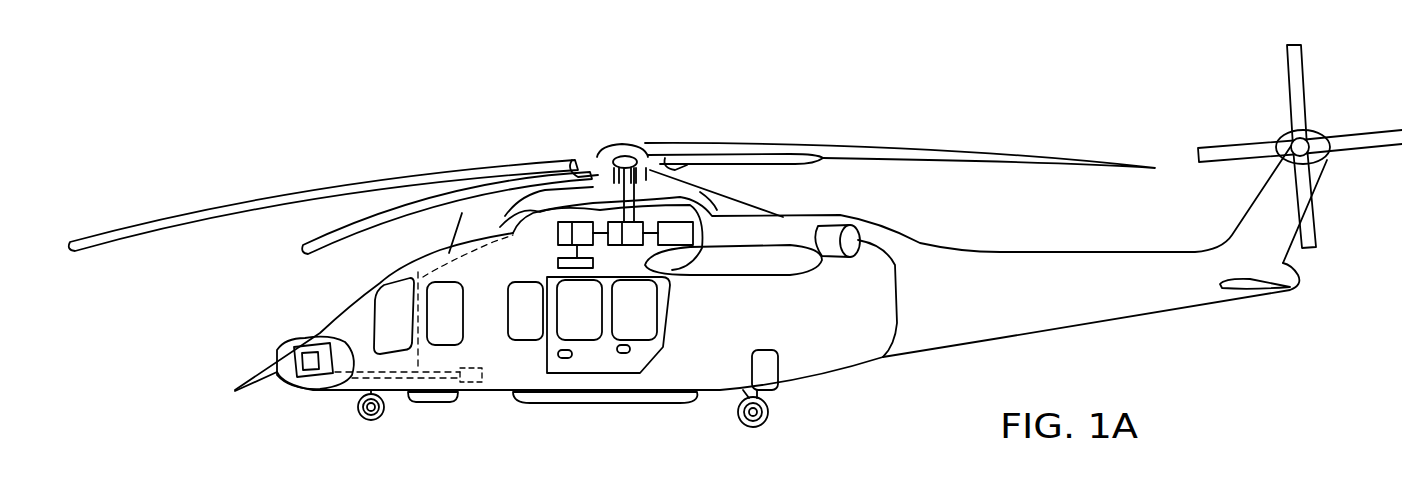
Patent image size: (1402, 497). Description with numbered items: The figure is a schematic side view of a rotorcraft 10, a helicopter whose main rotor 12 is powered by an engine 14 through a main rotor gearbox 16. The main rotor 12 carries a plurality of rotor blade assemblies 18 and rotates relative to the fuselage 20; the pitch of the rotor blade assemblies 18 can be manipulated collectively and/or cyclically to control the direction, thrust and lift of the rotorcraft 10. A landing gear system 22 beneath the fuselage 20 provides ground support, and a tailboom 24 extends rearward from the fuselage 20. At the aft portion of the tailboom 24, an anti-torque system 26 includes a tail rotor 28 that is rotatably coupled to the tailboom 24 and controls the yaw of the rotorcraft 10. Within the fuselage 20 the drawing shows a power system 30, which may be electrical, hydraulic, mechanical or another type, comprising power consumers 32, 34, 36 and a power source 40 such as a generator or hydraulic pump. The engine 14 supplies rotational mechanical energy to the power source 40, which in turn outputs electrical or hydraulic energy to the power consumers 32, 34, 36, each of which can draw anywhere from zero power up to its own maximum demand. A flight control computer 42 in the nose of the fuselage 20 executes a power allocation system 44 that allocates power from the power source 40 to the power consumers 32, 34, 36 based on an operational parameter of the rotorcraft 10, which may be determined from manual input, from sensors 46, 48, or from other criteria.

The rotorcraft 10 is at (366, 124).
The main rotor 12 is at (625, 143).
The engine 14 is at (673, 222).
The main rotor gearbox 16 is at (628, 245).
The rotor blade assemblies 18 is at (965, 147).
The fuselage 20 is at (660, 380).
The landing gear system 22 is at (768, 412).
The tailboom 24 is at (1068, 328).
The anti-torque system 26 is at (1320, 121).
The tail rotor 28 is at (1313, 153).
The power system 30 is at (533, 257).
The power consumer 32 is at (562, 222).
The power consumer 34 is at (617, 222).
The power consumer 36 is at (582, 268).
The power source 40 is at (582, 222).
The flight control computer 42 is at (327, 343).
The power allocation system 44 is at (328, 367).
The sensor 46 is at (248, 375).
The sensor 48 is at (477, 387).